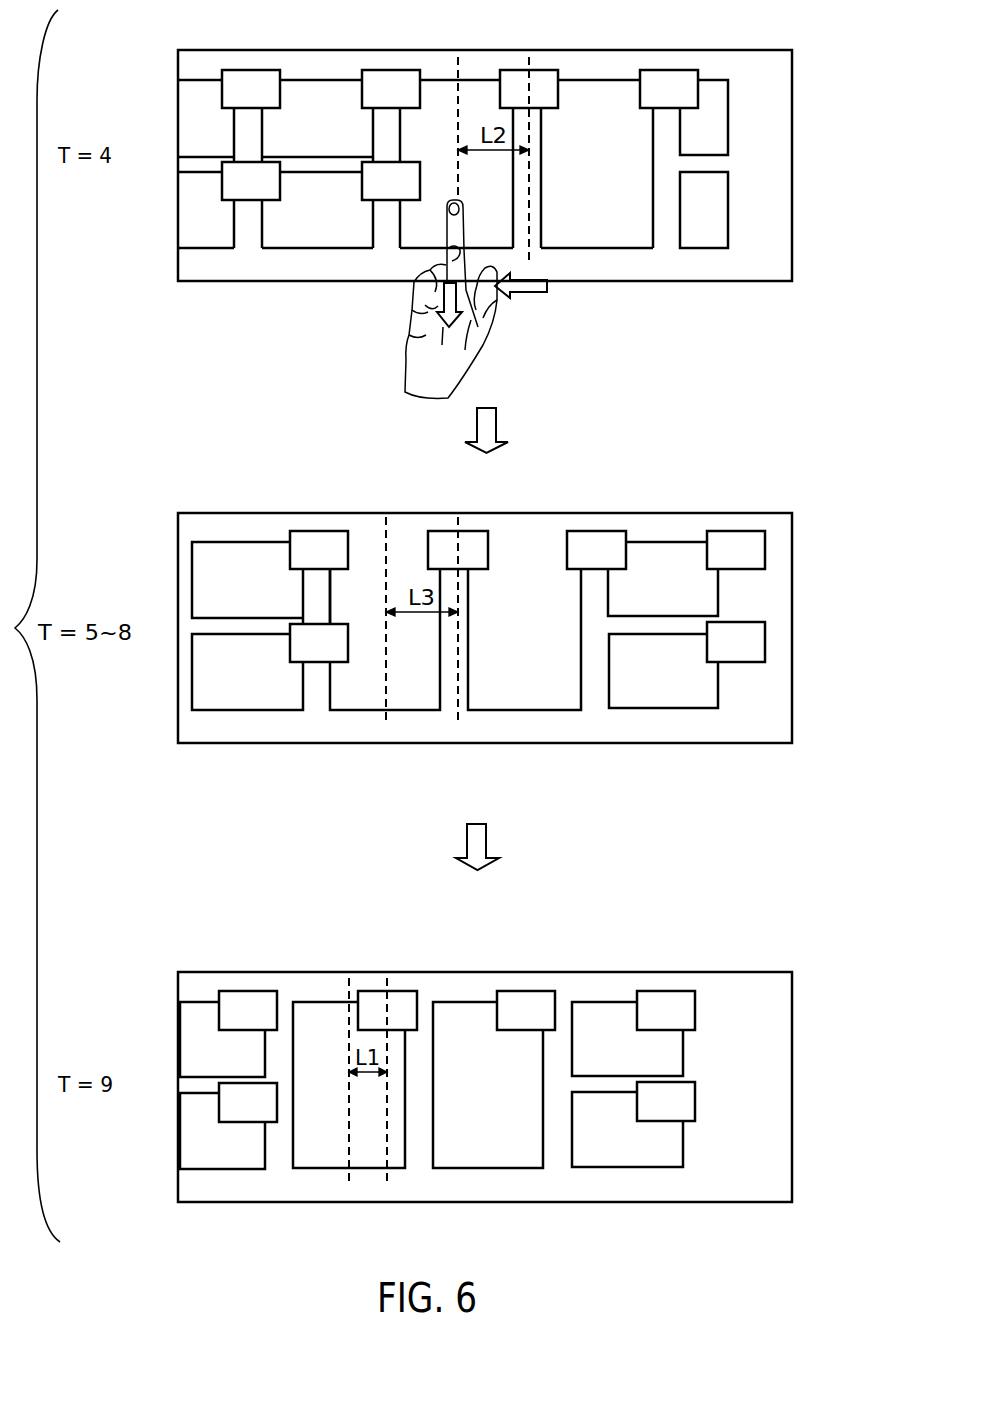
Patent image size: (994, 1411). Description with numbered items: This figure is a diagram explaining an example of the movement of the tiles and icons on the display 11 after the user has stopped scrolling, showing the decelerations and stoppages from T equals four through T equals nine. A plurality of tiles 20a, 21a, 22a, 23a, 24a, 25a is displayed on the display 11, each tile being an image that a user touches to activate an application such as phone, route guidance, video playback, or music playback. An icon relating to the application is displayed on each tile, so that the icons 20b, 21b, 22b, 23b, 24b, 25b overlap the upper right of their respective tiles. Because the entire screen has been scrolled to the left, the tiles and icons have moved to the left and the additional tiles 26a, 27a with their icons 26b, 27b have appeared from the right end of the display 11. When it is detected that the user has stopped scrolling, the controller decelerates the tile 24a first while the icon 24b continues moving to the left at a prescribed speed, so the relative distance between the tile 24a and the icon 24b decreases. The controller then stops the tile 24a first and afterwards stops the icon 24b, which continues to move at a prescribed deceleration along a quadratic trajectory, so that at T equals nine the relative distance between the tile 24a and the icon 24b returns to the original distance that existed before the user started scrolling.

The display 11 is at (792, 157).
The tile 20a is at (193, 103).
The icon 20b is at (252, 82).
The tile 21a is at (190, 230).
The icon 21b is at (248, 193).
The tile 22a is at (322, 105).
The icon 22b is at (392, 82).
The tile 23a is at (320, 230).
The icon 23b is at (388, 193).
The tile 24a is at (467, 103).
The icon 24b is at (538, 100).
The tile 25a is at (603, 105).
The icon 25b is at (668, 100).
The tile 26a is at (722, 105).
The tab 26b is at (738, 540).
The tile 27a is at (718, 230).
The tab 27b is at (737, 653).